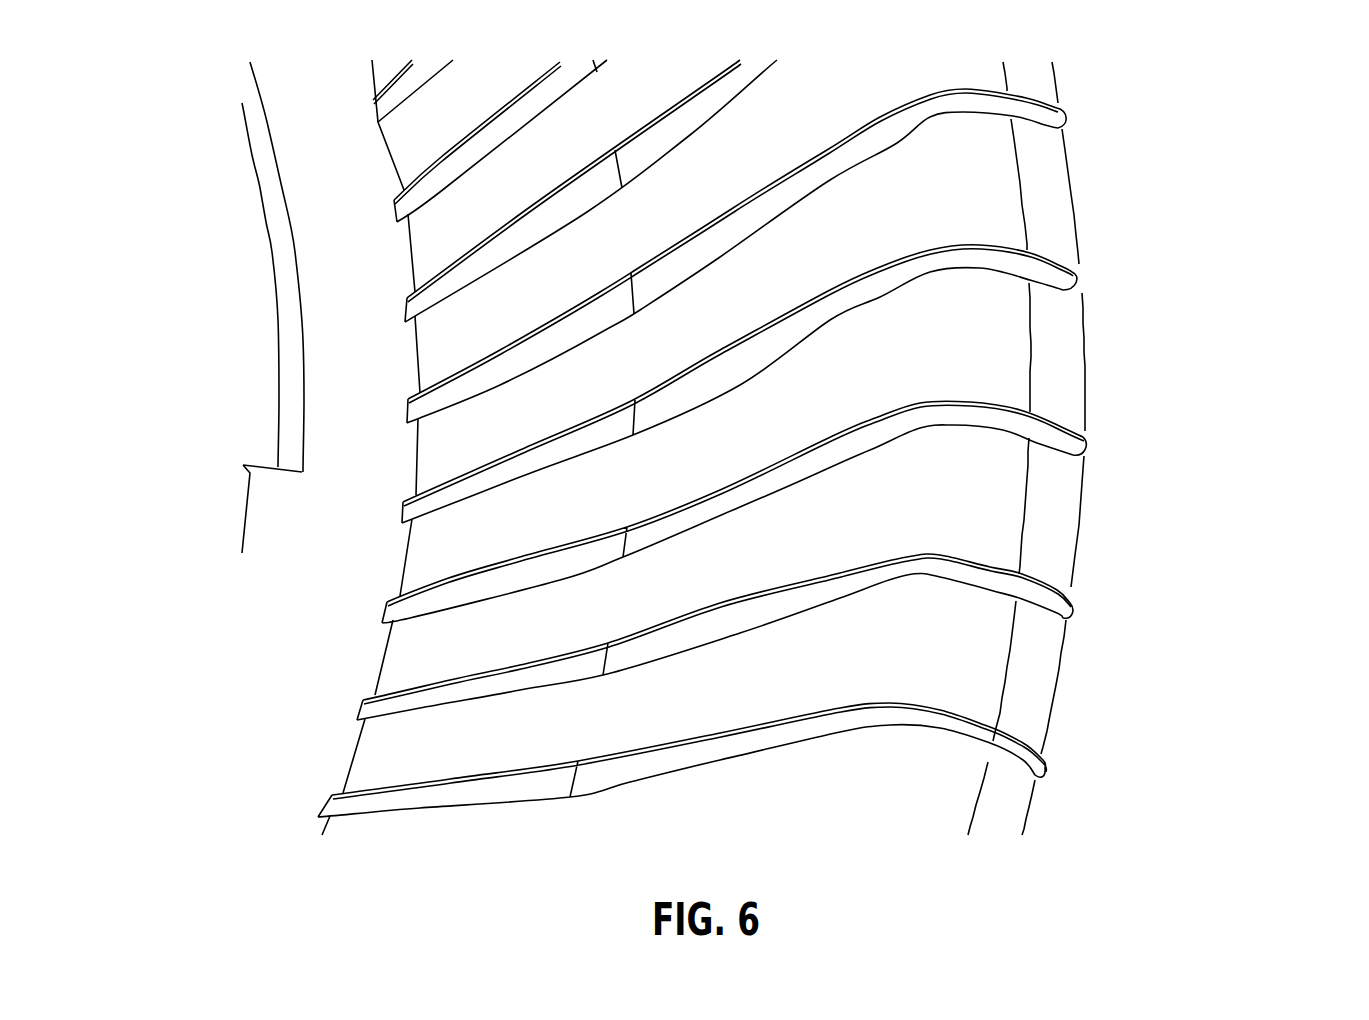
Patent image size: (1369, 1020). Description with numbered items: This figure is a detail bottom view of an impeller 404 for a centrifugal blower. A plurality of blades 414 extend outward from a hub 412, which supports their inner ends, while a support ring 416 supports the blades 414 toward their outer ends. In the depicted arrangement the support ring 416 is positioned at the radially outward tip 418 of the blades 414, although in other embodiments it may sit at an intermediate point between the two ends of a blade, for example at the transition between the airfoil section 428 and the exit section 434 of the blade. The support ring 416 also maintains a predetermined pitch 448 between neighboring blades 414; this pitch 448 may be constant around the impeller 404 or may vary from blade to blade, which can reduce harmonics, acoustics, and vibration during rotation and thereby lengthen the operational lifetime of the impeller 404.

The impeller 404 is at (193, 338).
The hub 412 is at (303, 429).
The blades 414 is at (1037, 262).
The support ring 416 is at (1063, 505).
The radially outward tip 418 is at (1075, 281).
The airfoil section 428 is at (475, 497).
The exit section 434 is at (947, 425).
The pitch 448 is at (1083, 356).